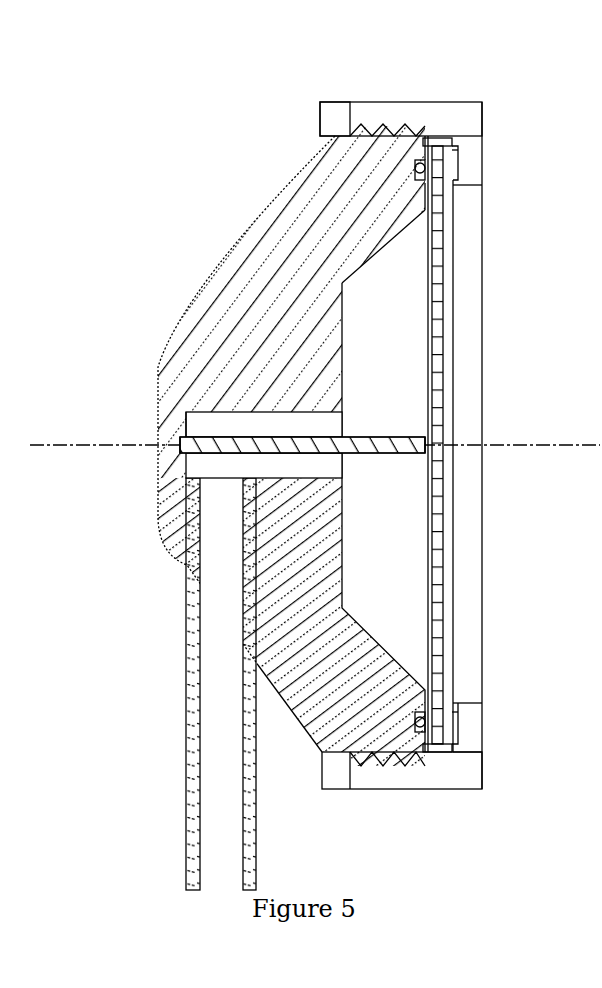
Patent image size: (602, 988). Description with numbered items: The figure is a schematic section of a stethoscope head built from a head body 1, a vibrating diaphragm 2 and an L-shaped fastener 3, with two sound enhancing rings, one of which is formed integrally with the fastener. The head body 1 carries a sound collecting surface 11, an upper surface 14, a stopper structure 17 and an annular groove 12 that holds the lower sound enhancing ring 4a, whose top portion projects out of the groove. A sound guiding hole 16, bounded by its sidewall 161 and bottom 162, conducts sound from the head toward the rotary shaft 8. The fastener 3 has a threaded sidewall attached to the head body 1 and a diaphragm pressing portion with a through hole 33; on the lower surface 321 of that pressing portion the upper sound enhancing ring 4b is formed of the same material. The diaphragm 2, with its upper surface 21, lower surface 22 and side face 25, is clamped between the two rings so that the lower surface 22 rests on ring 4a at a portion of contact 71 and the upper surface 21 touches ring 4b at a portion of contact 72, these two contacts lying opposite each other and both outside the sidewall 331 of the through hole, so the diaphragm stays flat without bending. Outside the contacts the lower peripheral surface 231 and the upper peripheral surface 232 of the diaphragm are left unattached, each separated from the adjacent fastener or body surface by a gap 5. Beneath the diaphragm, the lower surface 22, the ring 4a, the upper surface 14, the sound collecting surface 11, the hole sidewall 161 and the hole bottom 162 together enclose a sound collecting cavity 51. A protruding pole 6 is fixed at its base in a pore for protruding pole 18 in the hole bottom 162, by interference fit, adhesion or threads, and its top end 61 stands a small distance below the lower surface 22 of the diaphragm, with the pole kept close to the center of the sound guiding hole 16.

The head body 1 is at (207, 354).
The vibrating diaphragm 2 is at (438, 338).
The fastener 3 is at (362, 103).
The sound enhancing ring 4a is at (415, 167).
The sound enhancing ring 4b is at (452, 171).
The gap 5 is at (432, 136).
The protruding pole 6 is at (400, 438).
The rotary shaft 8 is at (200, 714).
The sound collecting surface 11 is at (373, 249).
The annular groove 12 is at (427, 142).
The upper surface 14 is at (415, 193).
The sound guiding hole 16 is at (206, 427).
The stopper structure 17 is at (333, 103).
The pore for protruding pole 18 is at (180, 446).
The upper surface 21 is at (453, 372).
The lower surface 22 is at (437, 253).
The side face 25 is at (466, 124).
The through hole 33 is at (463, 612).
The sound collecting cavity 51 is at (398, 317).
The top end 61 is at (426, 450).
The portion of contact 71 is at (427, 768).
The portion of contact 72 is at (469, 753).
The sidewall of sound guiding hole 161 is at (207, 408).
The bottom of sound guiding hole 162 is at (188, 465).
The lower peripheral surface of vibrating diaphragm 231 is at (352, 128).
The upper peripheral surface of vibrating diaphragm 232 is at (458, 186).
The lower surface of diaphragm pressing portion 321 is at (458, 150).
The sidewall of through hole 331 is at (465, 705).